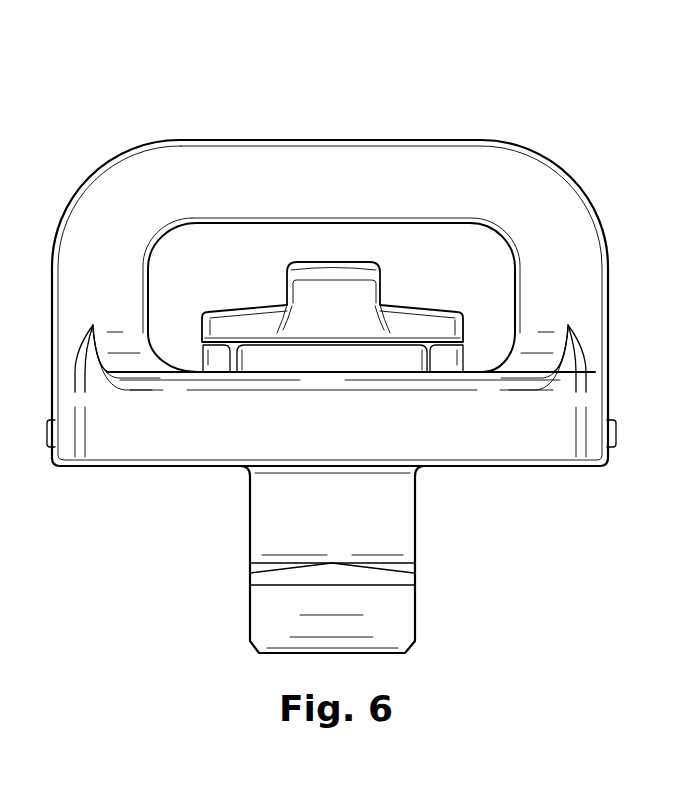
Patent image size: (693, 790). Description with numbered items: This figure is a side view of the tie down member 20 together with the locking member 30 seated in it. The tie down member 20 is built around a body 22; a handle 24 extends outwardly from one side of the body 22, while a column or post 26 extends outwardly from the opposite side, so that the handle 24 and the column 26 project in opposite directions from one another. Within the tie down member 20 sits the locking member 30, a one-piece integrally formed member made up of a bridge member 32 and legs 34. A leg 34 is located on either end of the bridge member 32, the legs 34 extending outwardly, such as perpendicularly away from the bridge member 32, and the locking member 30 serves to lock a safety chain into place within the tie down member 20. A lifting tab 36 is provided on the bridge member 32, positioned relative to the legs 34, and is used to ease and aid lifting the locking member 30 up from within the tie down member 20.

The tie down member 20 is at (528, 100).
The body 22 is at (543, 420).
The handle 24 is at (331, 178).
The column 26 is at (362, 623).
The locking member 30 is at (426, 270).
The bridge member 32 is at (417, 323).
The leg 34 is at (447, 353).
The lifting tab 36 is at (313, 273).